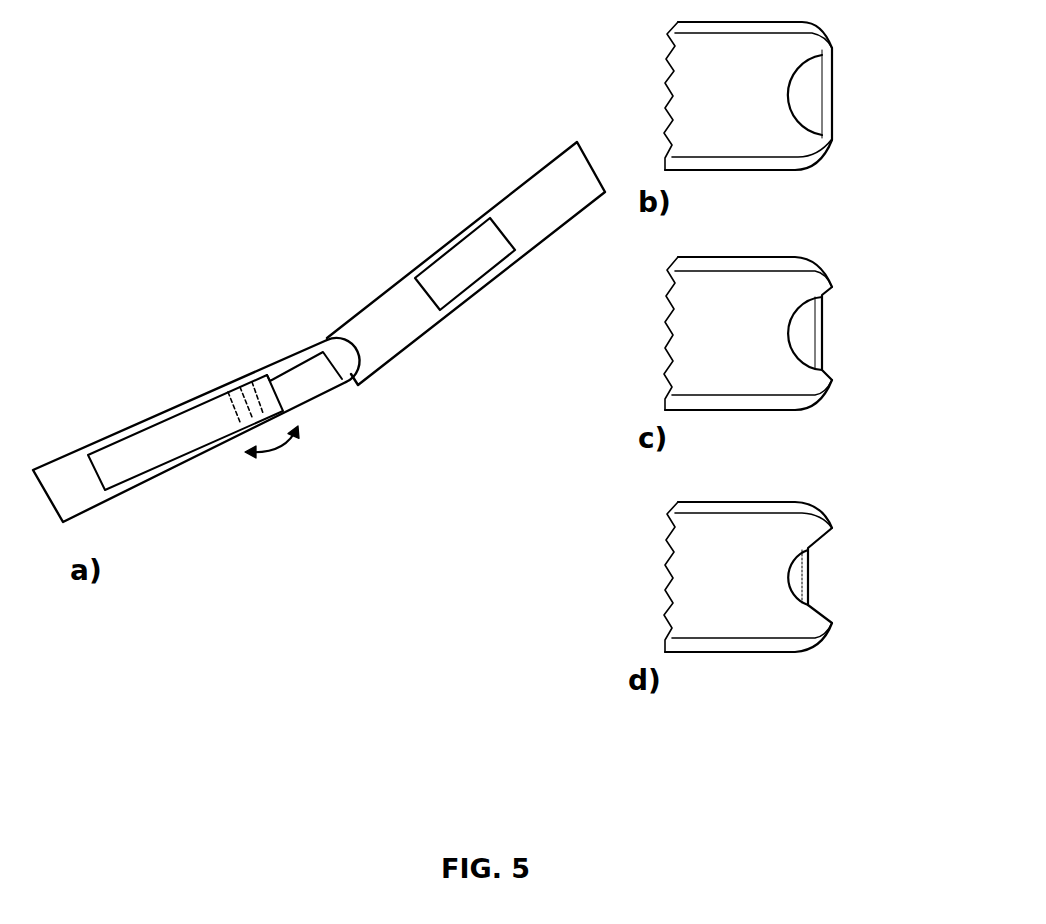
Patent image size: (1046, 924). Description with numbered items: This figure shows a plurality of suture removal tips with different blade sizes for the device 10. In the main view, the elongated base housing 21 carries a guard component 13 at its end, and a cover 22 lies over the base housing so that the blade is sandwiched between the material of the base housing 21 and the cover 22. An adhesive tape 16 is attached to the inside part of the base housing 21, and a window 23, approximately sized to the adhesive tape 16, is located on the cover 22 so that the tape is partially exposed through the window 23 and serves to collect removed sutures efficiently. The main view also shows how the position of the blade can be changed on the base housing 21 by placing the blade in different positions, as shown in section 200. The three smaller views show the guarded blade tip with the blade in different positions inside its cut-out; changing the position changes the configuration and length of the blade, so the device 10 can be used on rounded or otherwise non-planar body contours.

The device 10 is at (297, 242).
The guard component 13 is at (353, 345).
The adhesive tape 16 is at (135, 448).
The base housing 21 is at (60, 473).
The cover 22 is at (543, 178).
The window 23 is at (462, 255).
The section 200 is at (277, 450).